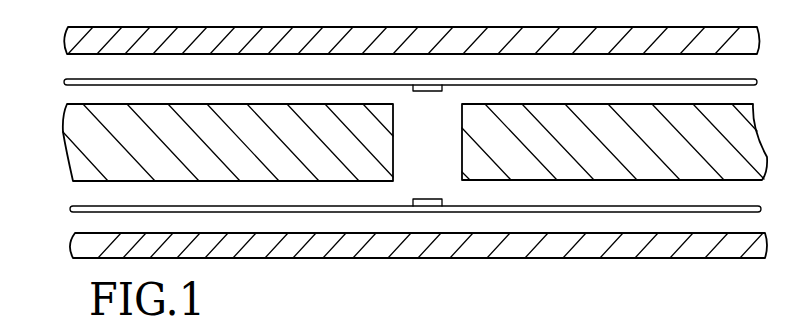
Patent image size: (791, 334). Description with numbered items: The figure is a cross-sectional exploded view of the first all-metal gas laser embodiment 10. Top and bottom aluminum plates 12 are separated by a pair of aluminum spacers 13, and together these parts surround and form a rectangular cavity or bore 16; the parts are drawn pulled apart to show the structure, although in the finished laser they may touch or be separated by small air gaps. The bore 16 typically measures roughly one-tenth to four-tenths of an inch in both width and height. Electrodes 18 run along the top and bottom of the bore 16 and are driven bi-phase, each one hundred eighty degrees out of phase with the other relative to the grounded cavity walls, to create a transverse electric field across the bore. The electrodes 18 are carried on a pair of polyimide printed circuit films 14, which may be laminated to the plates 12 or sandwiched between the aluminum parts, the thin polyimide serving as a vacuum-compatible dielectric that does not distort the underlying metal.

The all-metal gas laser embodiment 10 is at (79, 218).
The aluminum plates 12 is at (233, 51).
The aluminum spacers 13 is at (350, 180).
The polyimide printed circuit films 14 is at (616, 79).
The rectangular cavity or bore 16 is at (412, 137).
The electrodes 18 is at (442, 202).